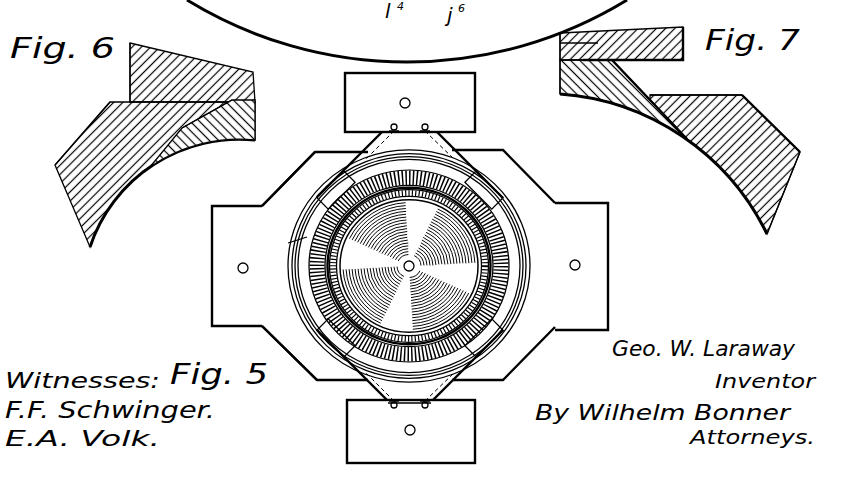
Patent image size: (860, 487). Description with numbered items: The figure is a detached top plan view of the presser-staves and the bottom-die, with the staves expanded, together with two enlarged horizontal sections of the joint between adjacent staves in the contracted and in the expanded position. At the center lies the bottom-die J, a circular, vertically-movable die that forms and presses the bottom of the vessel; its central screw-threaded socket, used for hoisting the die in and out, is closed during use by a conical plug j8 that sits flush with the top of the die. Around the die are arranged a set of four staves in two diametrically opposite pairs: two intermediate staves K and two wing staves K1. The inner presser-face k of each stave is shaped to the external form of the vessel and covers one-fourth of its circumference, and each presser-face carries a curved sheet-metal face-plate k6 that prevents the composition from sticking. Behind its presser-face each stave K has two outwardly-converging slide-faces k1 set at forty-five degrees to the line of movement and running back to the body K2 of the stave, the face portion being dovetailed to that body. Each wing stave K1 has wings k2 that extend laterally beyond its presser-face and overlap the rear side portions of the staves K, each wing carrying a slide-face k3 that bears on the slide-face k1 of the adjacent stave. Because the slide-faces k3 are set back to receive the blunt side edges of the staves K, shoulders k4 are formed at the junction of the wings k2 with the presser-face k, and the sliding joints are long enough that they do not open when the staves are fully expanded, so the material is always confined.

In FIG. 5, the presser stave K is at (352, 123).
In FIG. 6, the presser stave K is at (166, 174).
In FIG. 5, the wing stave K1 is at (230, 237).
In FIG. 6, the wing stave K1 is at (182, 128).
In FIG. 7, the wing stave K1 is at (768, 229).
In FIG. 5, the body of the stave K2 is at (420, 97).
In FIG. 6, the body of the stave K2 is at (145, 52).
In FIG. 7, the body of the stave K2 is at (625, 30).
In FIG. 5, the presser-face k is at (537, 282).
In FIG. 5, the slide-face k1 is at (368, 146).
In FIG. 7, the slide-face k1 is at (632, 81).
In FIG. 5, the wing k2 is at (346, 398).
In FIG. 6, the wing k2 is at (102, 73).
In FIG. 7, the wing k2 is at (748, 101).
In FIG. 5, the slide-face of the wing k3 is at (547, 352).
In FIG. 6, the slide-face of the wing k3 is at (145, 175).
In FIG. 7, the slide-face of the wing k3 is at (684, 176).
In FIG. 5, the shoulder k4 is at (500, 197).
In FIG. 6, the shoulder k4 is at (117, 207).
In FIG. 7, the shoulder k4 is at (735, 190).
In FIG. 5, the face-plate k6 is at (287, 248).
In FIG. 5, the conical plug j8 is at (404, 267).
In FIG. 5, the bottom-die J is at (409, 266).